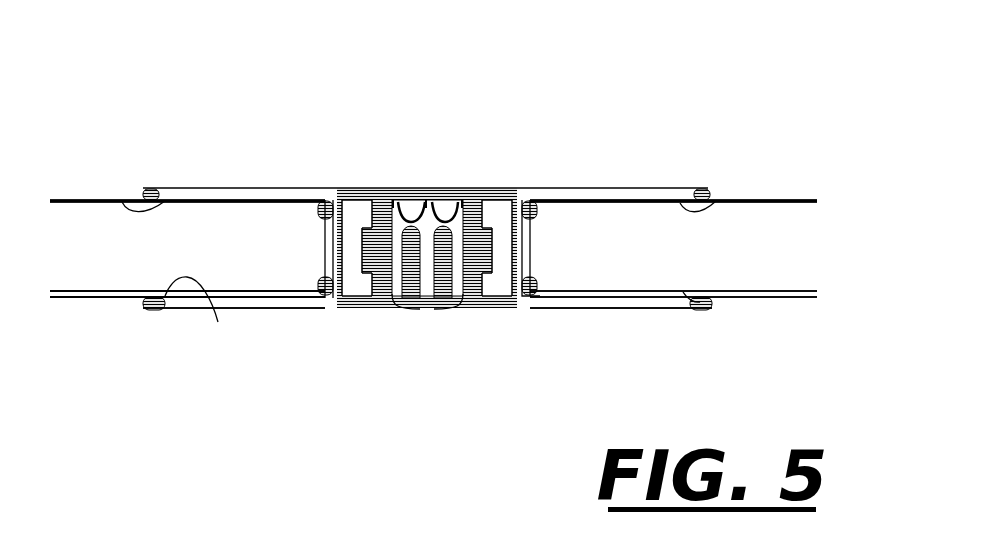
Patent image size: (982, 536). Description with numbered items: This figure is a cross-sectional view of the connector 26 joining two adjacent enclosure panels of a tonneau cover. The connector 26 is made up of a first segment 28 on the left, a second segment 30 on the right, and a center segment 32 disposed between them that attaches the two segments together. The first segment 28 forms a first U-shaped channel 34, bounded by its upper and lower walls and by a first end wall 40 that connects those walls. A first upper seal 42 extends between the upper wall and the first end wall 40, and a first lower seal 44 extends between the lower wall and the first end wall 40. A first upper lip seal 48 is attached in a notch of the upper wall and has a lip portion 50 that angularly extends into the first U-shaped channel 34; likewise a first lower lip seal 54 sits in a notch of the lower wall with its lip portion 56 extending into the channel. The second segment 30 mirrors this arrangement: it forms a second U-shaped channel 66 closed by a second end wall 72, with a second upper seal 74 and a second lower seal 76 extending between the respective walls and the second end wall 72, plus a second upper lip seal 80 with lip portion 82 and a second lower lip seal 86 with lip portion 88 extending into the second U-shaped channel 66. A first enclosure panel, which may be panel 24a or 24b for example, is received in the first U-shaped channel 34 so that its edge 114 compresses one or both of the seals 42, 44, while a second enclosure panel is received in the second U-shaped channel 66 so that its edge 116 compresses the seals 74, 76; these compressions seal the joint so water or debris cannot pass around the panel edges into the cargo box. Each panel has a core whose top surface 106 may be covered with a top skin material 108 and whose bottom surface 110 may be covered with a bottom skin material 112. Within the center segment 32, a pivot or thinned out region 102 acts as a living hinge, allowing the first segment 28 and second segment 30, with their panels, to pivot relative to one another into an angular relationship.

The connector 26 is at (320, 56).
The first segment 28 is at (228, 180).
The second segment 30 is at (622, 176).
The center segment 32 is at (443, 180).
The first U-shaped channel 34 is at (108, 309).
The first end wall 40 is at (337, 232).
The first upper seal 42 is at (320, 205).
The first lower seal 44 is at (325, 280).
The first upper lip seal 48 is at (151, 190).
The lip portion 50 is at (130, 202).
The first lower lip seal 54 is at (150, 310).
The lip portion 56 is at (198, 310).
The second U-shaped channel 66 is at (737, 311).
The second end wall 72 is at (520, 217).
The second upper seal 74 is at (527, 208).
The second lower seal 76 is at (527, 290).
The second upper lip seal 80 is at (700, 192).
The lip portion 82 is at (717, 208).
The second lower lip seal 86 is at (700, 310).
The lip portion 88 is at (683, 292).
The pivot or thinned out region 102 is at (427, 190).
The top surface 106 is at (63, 201).
The top skin material 108 is at (797, 200).
The bottom surface 110 is at (78, 293).
The bottom skin material 112 is at (783, 293).
The edge 114 is at (330, 243).
The edge 116 is at (517, 243).
The enclosure panel 24a is at (187, 268).
The enclosure panel 24b is at (387, 269).